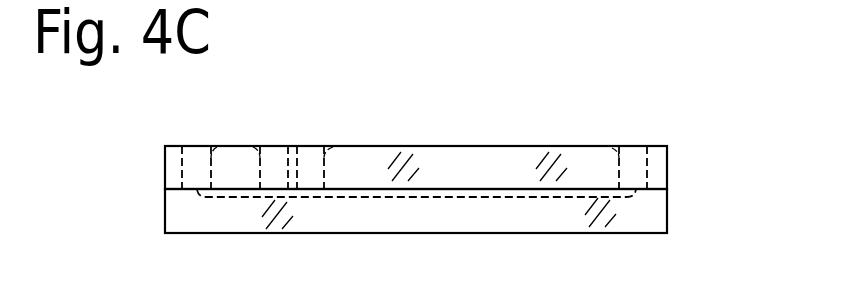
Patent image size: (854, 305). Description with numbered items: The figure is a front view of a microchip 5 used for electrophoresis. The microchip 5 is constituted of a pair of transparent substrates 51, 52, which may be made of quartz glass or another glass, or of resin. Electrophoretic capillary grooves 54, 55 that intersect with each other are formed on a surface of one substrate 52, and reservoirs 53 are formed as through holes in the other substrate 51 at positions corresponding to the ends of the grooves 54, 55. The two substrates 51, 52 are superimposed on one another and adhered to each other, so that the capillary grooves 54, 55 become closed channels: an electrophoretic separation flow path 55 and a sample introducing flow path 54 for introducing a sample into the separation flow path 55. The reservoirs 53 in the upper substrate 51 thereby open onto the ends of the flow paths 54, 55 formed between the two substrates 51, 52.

The microchip 5 is at (152, 192).
The transparent substrate 51 is at (660, 167).
The transparent substrate 52 is at (658, 213).
The reservoirs 53 is at (253, 147).
The sample introducing flow path 54 is at (416, 242).
The electrophoretic separation flow path 55 is at (418, 196).